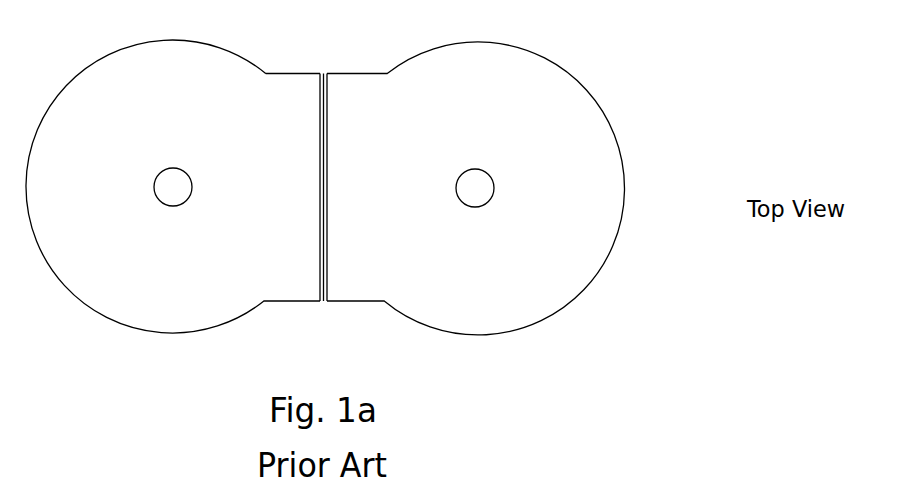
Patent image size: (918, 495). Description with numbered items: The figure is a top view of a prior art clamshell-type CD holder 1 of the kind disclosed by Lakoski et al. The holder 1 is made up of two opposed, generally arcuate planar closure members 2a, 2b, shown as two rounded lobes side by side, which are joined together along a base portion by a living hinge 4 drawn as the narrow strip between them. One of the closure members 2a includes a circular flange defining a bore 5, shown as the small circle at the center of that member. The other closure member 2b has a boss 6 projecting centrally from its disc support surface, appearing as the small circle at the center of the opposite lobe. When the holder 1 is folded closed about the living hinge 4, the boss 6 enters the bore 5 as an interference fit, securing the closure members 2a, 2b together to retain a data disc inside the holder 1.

The holder 1 is at (329, 171).
The closure member 2a is at (490, 42).
The closure member 2b is at (170, 40).
The living hinge 4 is at (326, 73).
The bore 5 is at (492, 180).
The boss 6 is at (190, 177).